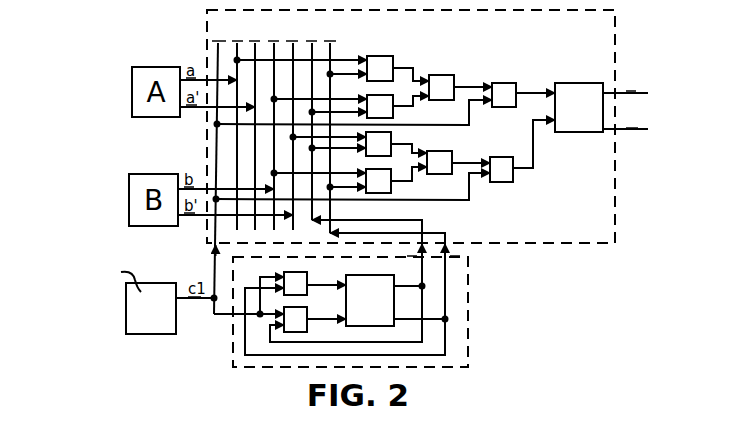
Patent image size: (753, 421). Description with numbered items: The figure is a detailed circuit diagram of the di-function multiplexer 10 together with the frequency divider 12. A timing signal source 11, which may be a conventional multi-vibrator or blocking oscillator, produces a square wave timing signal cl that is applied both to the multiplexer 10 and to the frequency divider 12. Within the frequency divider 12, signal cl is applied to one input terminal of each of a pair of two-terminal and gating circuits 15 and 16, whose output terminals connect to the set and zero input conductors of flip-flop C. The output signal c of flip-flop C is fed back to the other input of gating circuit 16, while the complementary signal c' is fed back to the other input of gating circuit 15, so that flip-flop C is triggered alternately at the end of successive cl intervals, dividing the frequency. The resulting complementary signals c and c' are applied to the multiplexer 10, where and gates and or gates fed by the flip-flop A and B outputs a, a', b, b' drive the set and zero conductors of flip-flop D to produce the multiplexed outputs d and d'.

The multiplexer 10 is at (530, 245).
The timing signal source 11 is at (143, 334).
The frequency divider 12 is at (370, 312).
The and gating circuit 15 is at (288, 271).
The and gating circuit 16 is at (311, 331).